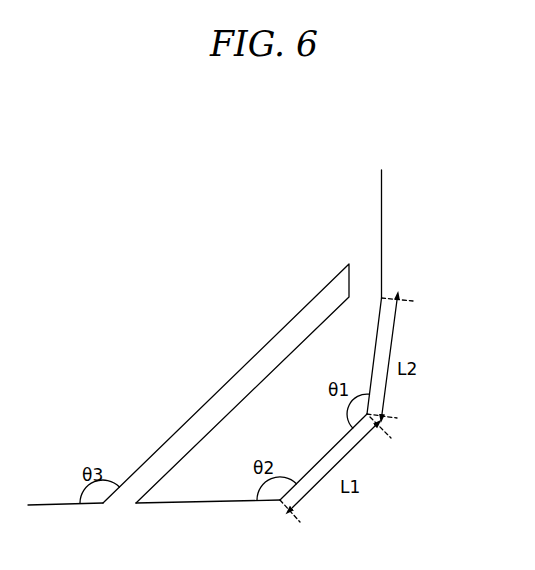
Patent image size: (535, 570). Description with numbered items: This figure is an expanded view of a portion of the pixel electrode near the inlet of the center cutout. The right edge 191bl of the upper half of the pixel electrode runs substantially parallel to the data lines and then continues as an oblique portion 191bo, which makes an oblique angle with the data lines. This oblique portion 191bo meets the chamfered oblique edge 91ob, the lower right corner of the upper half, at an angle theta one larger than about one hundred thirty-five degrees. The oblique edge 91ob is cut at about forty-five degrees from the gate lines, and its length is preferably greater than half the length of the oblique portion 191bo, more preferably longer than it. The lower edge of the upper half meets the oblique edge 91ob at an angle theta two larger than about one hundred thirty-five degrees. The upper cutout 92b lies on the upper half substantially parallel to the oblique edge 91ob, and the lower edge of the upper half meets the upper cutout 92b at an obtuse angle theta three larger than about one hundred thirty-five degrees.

The right edge of the upper half 191bl is at (382, 222).
The oblique portion of the right edge 191bo is at (377, 340).
The lower right corner of the upper half 91ob is at (315, 478).
The upper cutout 92b is at (277, 338).